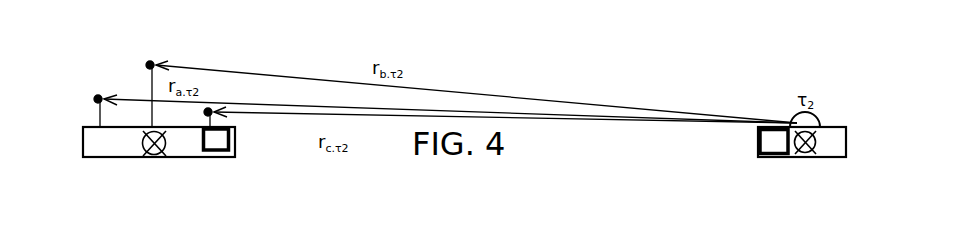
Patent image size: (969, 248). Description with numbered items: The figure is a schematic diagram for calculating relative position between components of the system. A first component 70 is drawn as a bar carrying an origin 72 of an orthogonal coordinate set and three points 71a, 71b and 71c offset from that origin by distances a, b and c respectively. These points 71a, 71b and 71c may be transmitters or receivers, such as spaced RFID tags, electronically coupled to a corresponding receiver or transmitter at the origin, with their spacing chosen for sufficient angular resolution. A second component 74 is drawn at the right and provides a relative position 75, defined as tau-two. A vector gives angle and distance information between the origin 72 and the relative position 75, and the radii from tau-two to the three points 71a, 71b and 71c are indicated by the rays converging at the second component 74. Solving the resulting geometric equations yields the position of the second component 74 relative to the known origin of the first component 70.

The first component 70 is at (220, 157).
The point a 71a is at (95, 100).
The point b 71b is at (150, 62).
The point c 71c is at (209, 109).
The origin 72 is at (158, 157).
The second component 74 is at (833, 157).
The relative position 75 is at (812, 157).